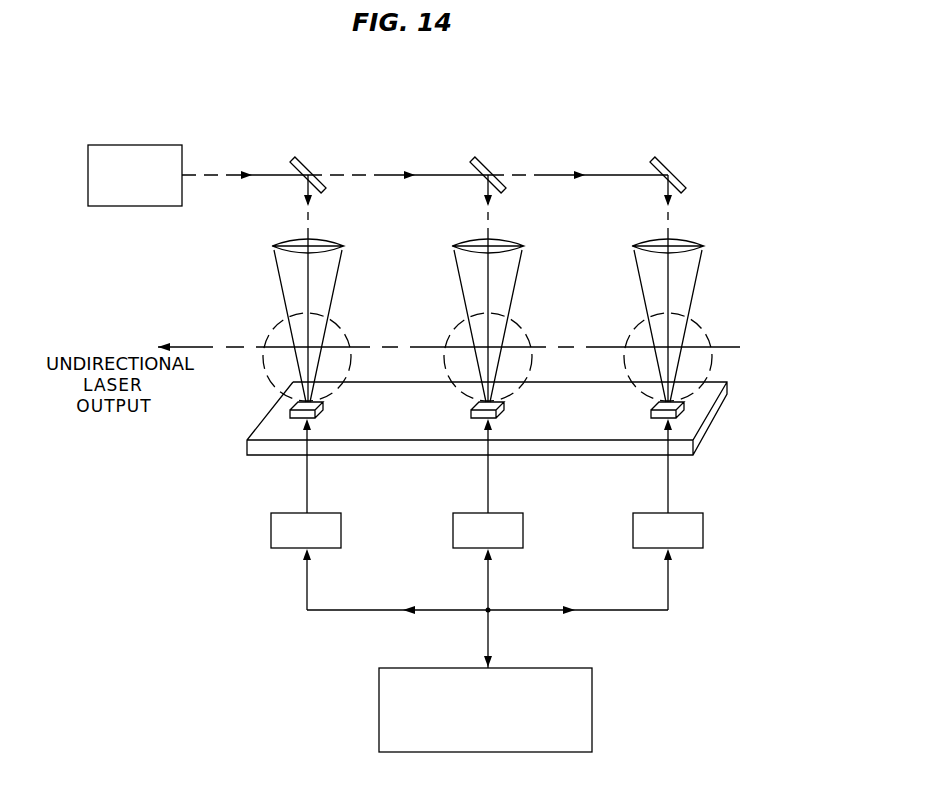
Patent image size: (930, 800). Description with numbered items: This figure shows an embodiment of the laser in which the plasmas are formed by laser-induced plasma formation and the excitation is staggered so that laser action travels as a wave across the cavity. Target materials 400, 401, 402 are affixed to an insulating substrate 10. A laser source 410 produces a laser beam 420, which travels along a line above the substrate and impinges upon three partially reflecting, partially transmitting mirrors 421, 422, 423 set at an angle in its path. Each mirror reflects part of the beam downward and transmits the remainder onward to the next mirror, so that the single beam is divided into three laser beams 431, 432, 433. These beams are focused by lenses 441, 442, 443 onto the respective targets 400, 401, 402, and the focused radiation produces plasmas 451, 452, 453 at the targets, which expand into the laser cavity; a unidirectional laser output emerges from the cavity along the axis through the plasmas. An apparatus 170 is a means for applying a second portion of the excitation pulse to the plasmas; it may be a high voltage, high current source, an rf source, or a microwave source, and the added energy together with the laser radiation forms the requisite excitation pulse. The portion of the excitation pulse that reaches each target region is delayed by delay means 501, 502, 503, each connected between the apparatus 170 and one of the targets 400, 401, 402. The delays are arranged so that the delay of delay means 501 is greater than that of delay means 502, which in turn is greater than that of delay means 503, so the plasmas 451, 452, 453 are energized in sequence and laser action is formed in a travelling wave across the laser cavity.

The insulating substrate 10 is at (248, 438).
The apparatus 170 is at (379, 712).
The target material 400 is at (300, 418).
The target material 401 is at (481, 418).
The target material 402 is at (661, 418).
The laser source 410 is at (134, 144).
The laser beam 420 is at (228, 172).
The partially reflecting, partially transmitting mirror 421 is at (306, 157).
The partially reflecting, partially transmitting mirror 422 is at (486, 157).
The partially reflecting, partially transmitting mirror 423 is at (670, 157).
The laser beam 431 is at (304, 189).
The laser beam 432 is at (484, 189).
The laser beam 433 is at (664, 189).
The lens 441 is at (272, 246).
The lens 442 is at (452, 246).
The lens 443 is at (632, 246).
The plasma 451 is at (278, 326).
The plasma 452 is at (459, 326).
The plasma 453 is at (639, 326).
The delay means 501 is at (276, 548).
The delay means 502 is at (466, 548).
The delay means 503 is at (646, 548).